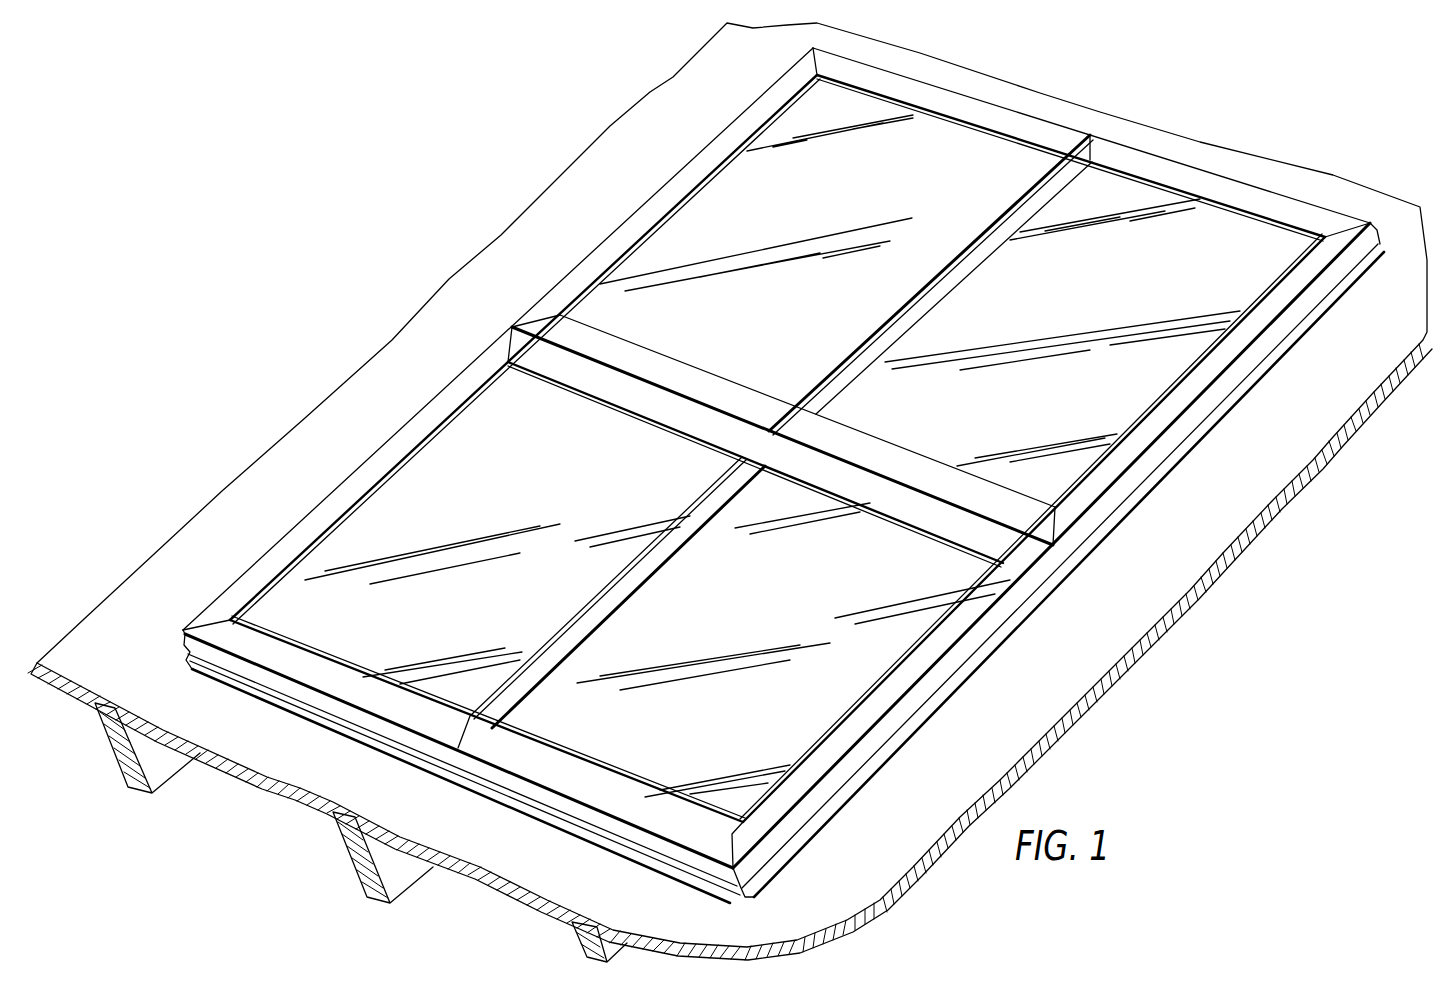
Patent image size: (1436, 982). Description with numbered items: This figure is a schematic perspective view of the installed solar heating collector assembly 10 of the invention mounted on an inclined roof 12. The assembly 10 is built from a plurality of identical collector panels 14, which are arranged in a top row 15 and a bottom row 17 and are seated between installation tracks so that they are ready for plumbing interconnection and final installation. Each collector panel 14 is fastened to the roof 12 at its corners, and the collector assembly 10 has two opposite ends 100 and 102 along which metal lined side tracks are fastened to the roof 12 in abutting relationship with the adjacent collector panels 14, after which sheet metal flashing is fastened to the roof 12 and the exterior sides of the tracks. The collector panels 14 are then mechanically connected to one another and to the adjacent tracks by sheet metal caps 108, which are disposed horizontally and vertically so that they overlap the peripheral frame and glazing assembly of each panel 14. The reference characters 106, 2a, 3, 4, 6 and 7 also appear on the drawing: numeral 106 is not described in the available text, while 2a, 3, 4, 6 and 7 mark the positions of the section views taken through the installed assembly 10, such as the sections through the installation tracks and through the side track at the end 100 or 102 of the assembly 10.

The solar heating collector assembly 10 is at (961, 425).
The inclined roof 12 is at (1090, 645).
The collector panel 14 is at (806, 256).
The top row 15 is at (650, 182).
The bottom row 17 is at (378, 438).
The opposite end 100 is at (1105, 510).
The opposite end 102 is at (465, 368).
The sill flashing 106 is at (684, 872).
The sheet metal cap 108 is at (212, 622).
The section line 2a is at (773, 735).
The section line 3 is at (1235, 170).
The section line 4 is at (1158, 150).
The section line 6 is at (918, 268).
The section line 7 is at (858, 412).